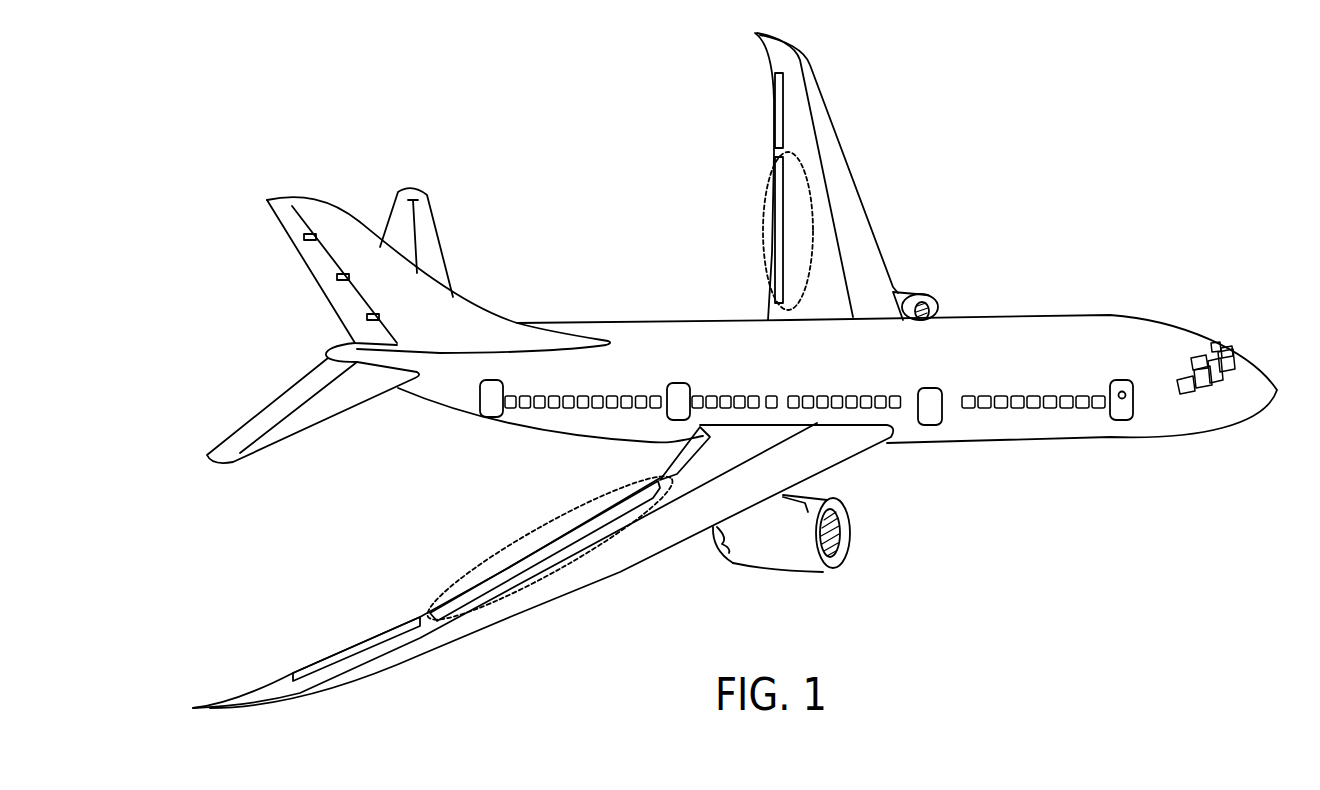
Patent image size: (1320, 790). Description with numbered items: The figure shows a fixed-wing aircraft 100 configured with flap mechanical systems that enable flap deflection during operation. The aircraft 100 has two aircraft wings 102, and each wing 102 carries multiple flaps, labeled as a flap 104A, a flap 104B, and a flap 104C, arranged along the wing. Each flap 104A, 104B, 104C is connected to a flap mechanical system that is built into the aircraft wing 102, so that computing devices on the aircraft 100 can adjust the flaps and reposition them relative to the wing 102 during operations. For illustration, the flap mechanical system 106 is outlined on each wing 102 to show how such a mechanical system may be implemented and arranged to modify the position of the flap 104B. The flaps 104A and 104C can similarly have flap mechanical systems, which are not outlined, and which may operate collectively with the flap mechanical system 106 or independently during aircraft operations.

The aircraft 100 is at (735, 370).
The aircraft wing 102 is at (660, 553).
The flap 104A is at (352, 653).
The flap 104B is at (476, 588).
The flap 104C is at (668, 470).
The flap mechanical system 106 is at (548, 583).